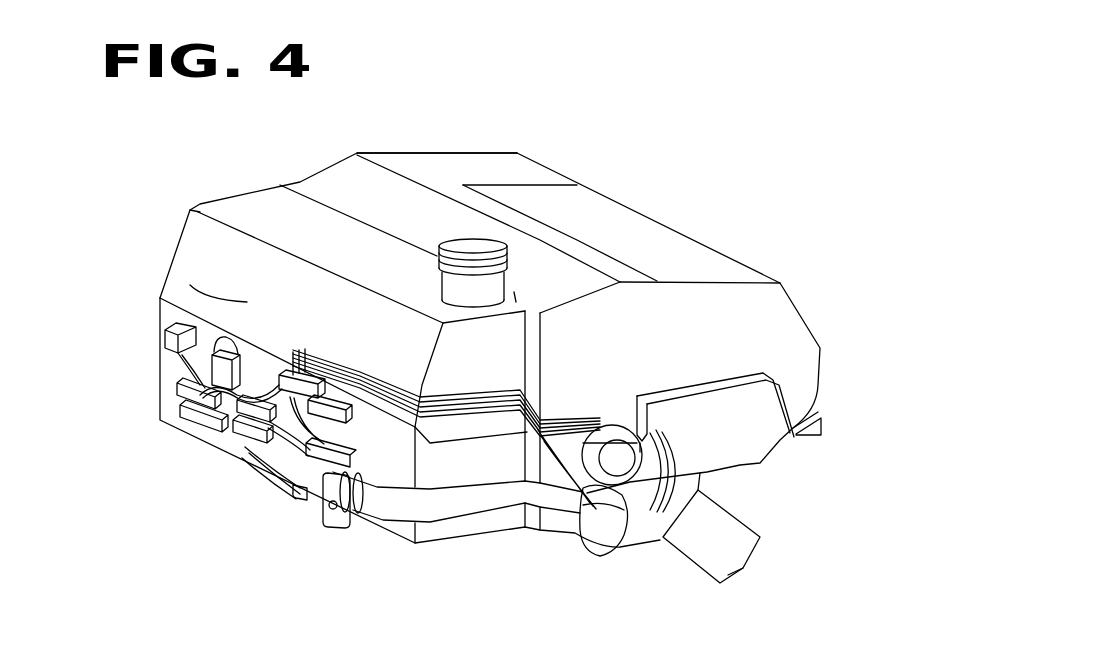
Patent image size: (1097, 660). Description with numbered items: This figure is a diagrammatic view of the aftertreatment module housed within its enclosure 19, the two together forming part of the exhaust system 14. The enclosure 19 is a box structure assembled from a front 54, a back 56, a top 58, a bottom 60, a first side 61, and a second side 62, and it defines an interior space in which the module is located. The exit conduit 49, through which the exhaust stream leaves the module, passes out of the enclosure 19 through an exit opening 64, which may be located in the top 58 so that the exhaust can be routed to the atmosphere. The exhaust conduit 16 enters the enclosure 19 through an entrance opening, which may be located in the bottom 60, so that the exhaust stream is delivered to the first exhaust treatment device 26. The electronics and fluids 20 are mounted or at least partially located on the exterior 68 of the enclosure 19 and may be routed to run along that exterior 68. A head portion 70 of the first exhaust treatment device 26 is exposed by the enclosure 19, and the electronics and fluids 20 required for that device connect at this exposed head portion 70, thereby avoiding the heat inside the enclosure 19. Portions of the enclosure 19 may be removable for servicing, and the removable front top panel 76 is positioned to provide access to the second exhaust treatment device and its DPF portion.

The exhaust system 14 is at (690, 111).
The exhaust conduit 16 is at (725, 572).
The enclosure 19 is at (458, 146).
The electronics and fluids 20 is at (243, 483).
The first exhaust treatment device 26 is at (617, 523).
The exit conduit 49 is at (438, 264).
The front 54 is at (713, 237).
The back 56 is at (190, 285).
The top 58 is at (379, 220).
The bottom 60 is at (475, 547).
The first side 61 is at (715, 391).
The second side 62 is at (313, 168).
The exit opening 64 is at (526, 302).
The exterior 68 is at (367, 183).
The head portion 70 is at (583, 535).
The front top panel 76 is at (560, 233).